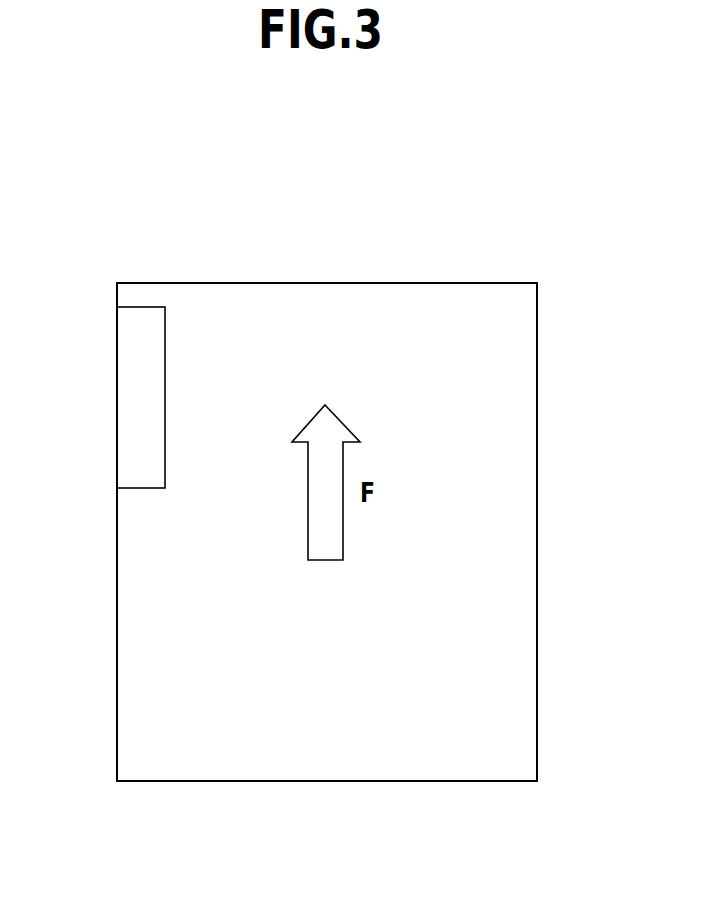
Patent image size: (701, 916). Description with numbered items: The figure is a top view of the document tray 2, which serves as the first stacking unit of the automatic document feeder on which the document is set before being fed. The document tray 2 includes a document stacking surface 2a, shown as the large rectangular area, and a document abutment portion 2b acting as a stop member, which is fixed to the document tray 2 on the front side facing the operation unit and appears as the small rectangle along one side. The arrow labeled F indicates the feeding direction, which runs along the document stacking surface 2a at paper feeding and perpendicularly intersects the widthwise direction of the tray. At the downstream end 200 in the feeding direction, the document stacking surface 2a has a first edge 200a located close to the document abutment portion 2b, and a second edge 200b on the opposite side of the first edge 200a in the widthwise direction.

The document tray 2 is at (204, 170).
The downstream end 200 is at (356, 283).
The first edge 200a is at (117, 283).
The second edge 200b is at (537, 283).
The document stacking surface 2a is at (517, 473).
The document abutment portion 2b is at (130, 402).